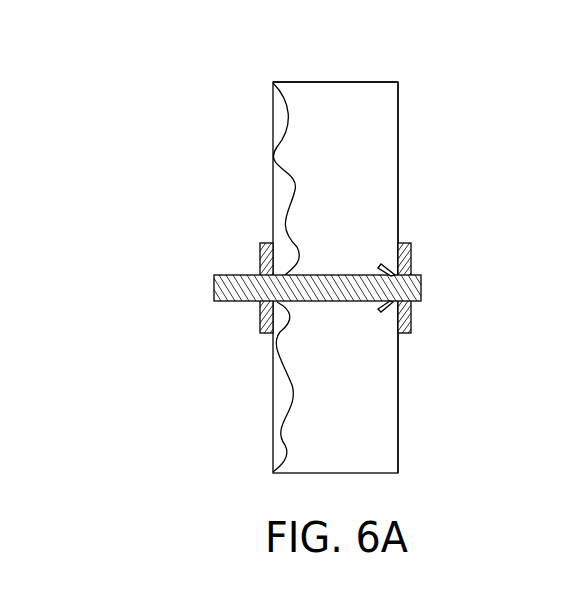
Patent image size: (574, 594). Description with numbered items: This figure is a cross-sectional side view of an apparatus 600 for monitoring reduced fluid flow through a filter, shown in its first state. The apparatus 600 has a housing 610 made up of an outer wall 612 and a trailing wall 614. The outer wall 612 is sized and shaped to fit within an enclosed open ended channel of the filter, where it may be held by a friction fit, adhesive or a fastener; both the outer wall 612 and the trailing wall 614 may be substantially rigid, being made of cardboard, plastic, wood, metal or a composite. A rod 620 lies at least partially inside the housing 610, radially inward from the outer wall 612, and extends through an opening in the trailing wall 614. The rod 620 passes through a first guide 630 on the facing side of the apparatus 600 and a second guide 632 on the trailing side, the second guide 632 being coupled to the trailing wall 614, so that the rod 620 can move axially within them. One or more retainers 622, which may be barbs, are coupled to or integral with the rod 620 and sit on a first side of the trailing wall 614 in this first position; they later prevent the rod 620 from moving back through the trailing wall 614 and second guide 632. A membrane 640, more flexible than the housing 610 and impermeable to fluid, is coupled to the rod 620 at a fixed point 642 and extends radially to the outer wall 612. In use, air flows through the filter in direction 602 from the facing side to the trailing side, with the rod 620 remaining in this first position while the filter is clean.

The apparatus 600 is at (235, 56).
The direction 602 is at (121, 99).
The housing 610 is at (404, 76).
The outer wall 612 is at (355, 82).
The trailing wall 614 is at (399, 139).
The rod 620 is at (229, 301).
The retainer 622 is at (382, 309).
The first guide 630 is at (259, 258).
The second guide 632 is at (412, 258).
The membrane 640 is at (278, 147).
The fixed point 642 is at (281, 275).